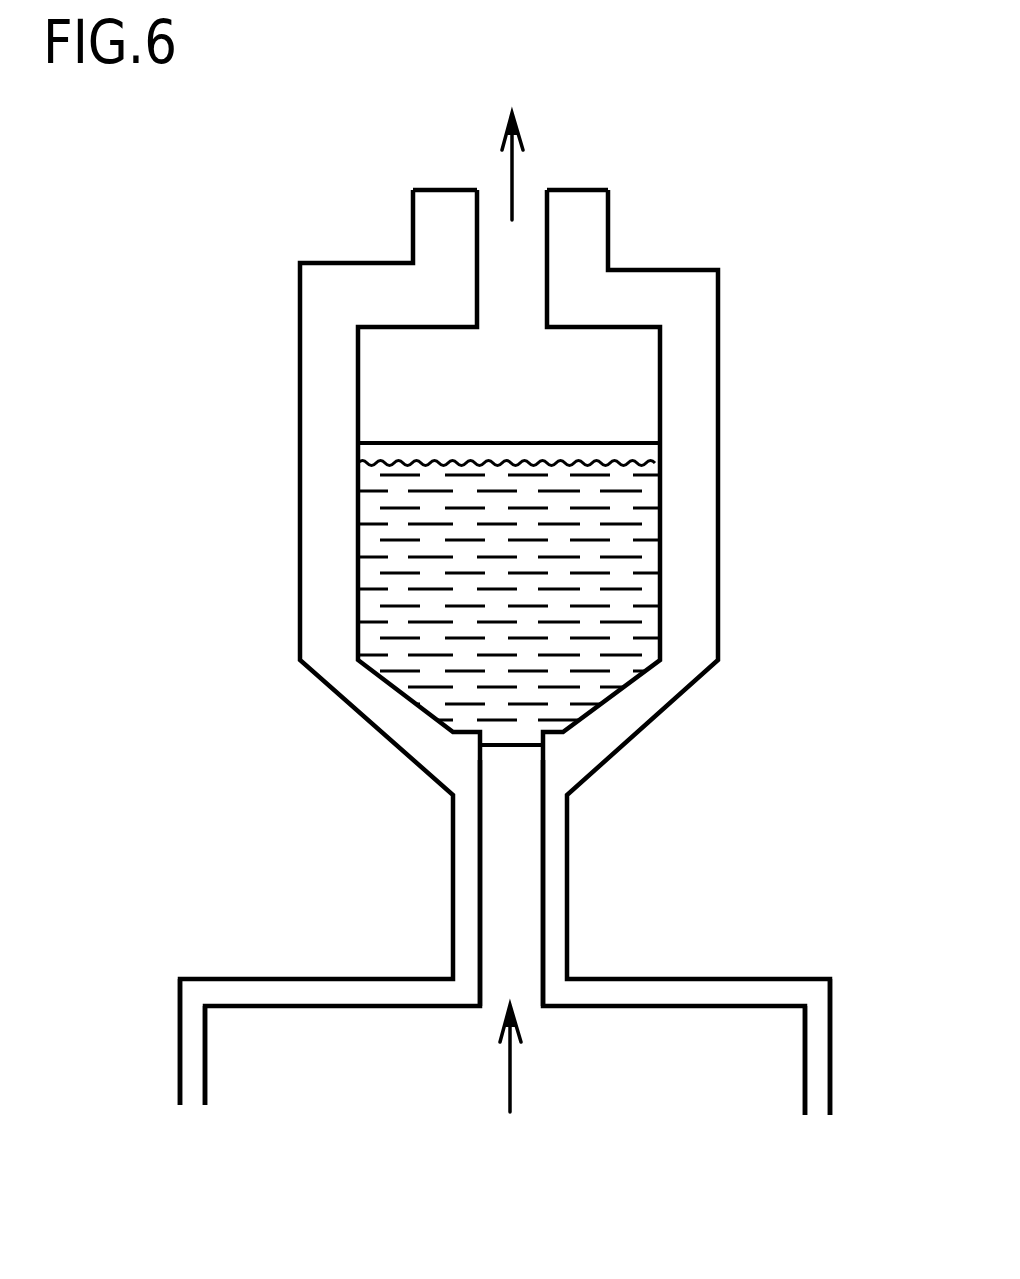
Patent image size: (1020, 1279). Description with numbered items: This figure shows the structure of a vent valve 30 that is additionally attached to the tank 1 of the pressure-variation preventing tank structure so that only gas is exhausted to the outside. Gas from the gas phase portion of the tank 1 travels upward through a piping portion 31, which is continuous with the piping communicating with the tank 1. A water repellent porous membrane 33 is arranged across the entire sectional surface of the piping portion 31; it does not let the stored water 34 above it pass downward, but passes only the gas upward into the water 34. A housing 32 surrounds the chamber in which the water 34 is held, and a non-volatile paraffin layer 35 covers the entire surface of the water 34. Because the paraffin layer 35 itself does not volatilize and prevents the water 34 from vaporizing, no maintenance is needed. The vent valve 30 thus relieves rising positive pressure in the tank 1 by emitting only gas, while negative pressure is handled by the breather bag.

The tank 1 is at (830, 1045).
The vent valve 30 is at (521, 614).
The piping portion 31 is at (553, 888).
The housing 32 is at (688, 508).
The water repellent porous membrane 33 is at (510, 738).
The stored water 34 is at (420, 550).
The non-volatile paraffin layer 35 is at (595, 455).